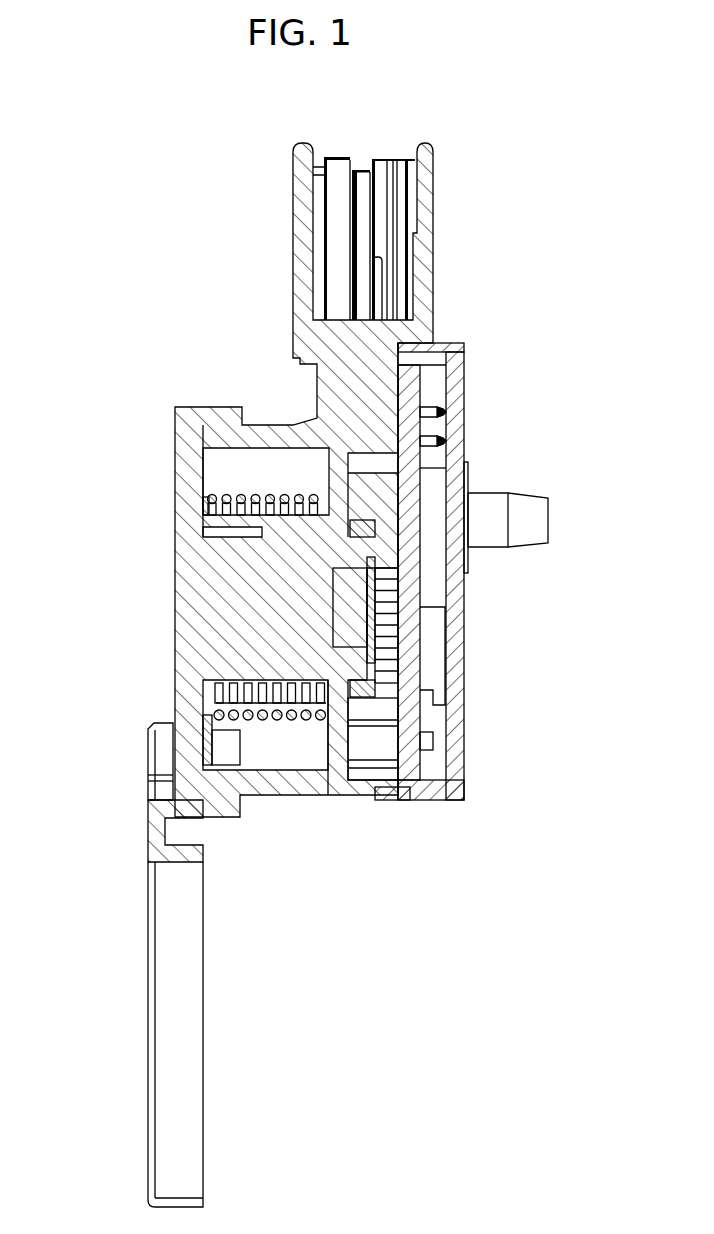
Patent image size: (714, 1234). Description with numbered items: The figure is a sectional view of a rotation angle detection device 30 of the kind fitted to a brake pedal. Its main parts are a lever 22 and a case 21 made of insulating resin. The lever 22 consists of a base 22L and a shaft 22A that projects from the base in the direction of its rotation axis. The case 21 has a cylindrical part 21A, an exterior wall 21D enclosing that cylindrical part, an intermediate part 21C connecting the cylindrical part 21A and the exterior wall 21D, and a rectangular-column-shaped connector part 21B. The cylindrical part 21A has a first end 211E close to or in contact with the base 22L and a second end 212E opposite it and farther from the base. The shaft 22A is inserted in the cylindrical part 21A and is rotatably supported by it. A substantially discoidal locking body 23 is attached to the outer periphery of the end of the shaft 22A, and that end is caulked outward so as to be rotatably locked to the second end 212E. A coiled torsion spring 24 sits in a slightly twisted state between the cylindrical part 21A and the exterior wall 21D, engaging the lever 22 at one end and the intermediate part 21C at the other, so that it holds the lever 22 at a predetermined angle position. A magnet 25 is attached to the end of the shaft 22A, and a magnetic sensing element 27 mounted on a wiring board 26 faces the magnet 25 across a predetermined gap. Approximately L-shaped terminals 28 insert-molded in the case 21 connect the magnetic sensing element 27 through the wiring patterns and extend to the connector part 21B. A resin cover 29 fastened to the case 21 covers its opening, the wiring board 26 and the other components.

The rotation angle detection device 30 is at (622, 172).
The case 21 is at (438, 963).
The cylindrical part 21A is at (273, 690).
The connector part 21B is at (417, 187).
The intermediate part 21C is at (337, 747).
The exterior wall 21D is at (272, 785).
The first end 211E is at (205, 517).
The second end 212E is at (348, 518).
The lever 22 is at (68, 695).
The shaft 22A is at (228, 630).
The base 22L is at (148, 832).
The locking body 23 is at (377, 692).
The spring 24 is at (208, 497).
The magnet 25 is at (387, 638).
The wiring board 26 is at (415, 568).
The magnetic sensing element 27 is at (395, 608).
The terminals 28 is at (378, 284).
The cover 29 is at (452, 740).